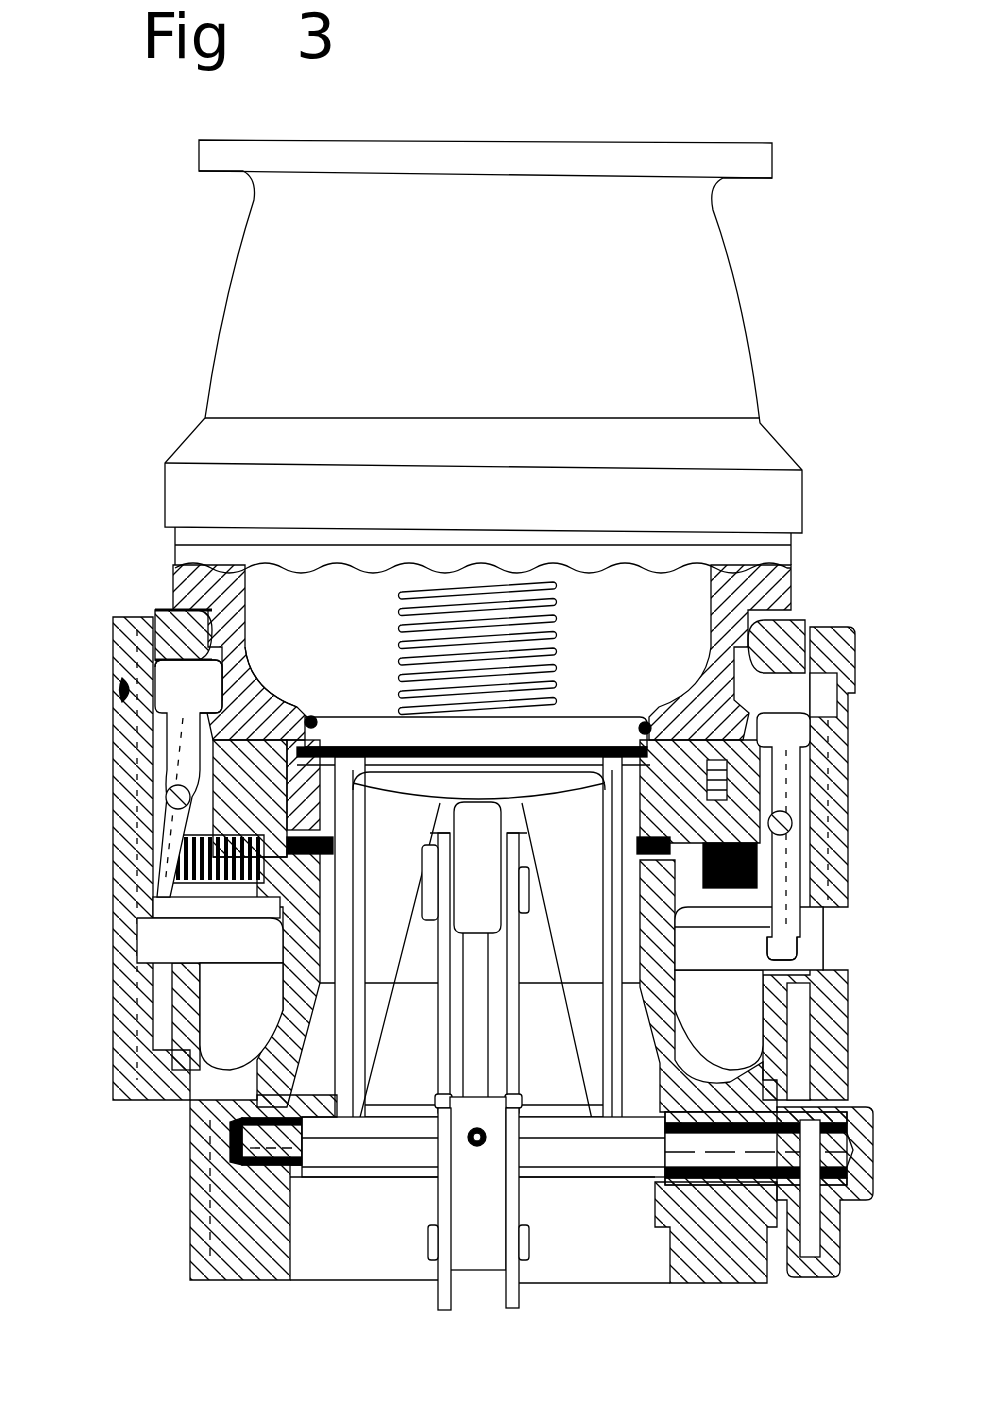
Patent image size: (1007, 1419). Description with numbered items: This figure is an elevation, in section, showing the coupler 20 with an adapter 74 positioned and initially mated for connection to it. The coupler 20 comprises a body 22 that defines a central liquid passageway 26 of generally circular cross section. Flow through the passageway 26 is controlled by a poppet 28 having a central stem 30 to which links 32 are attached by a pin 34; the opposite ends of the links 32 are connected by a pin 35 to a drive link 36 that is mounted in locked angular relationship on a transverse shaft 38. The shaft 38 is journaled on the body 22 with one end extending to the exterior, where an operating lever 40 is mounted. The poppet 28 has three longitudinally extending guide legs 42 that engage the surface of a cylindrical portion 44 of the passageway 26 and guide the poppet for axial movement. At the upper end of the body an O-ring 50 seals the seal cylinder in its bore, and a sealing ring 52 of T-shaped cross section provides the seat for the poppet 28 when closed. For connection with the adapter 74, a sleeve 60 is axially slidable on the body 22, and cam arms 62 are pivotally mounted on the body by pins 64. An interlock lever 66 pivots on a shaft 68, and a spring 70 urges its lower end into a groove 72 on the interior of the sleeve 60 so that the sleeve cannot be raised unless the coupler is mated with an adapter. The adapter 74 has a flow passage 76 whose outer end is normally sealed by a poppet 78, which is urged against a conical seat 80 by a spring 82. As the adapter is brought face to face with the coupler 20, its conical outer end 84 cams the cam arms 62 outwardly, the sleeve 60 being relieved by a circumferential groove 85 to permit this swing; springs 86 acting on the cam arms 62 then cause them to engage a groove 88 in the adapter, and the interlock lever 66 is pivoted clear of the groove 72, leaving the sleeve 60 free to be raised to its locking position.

The coupler 20 is at (100, 1058).
The body 22 is at (275, 1057).
The central liquid passageway 26 is at (292, 1228).
The poppet 28 is at (543, 788).
The central stem 30 is at (503, 940).
The links 32 is at (438, 1043).
The pin 34 is at (530, 878).
The pin 35 is at (529, 1240).
The drive link 36 is at (497, 1285).
The transverse shaft 38 is at (565, 1177).
The operating lever 40 is at (833, 1235).
The guide legs 42 is at (436, 1078).
The cylindrical portion 44 is at (336, 920).
The O-ring 50 is at (320, 803).
The sealing ring 52 is at (330, 746).
The sleeve 60 is at (848, 962).
The cam arms 62 is at (232, 652).
The pins 64 is at (166, 800).
The interlock lever 66 is at (802, 785).
The shaft 68 is at (792, 826).
The spring 70 is at (735, 910).
The groove 72 is at (830, 932).
The adapter 74 is at (778, 372).
The flow passage 76 is at (245, 607).
The poppet 78 is at (566, 715).
The conical seat 80 is at (312, 718).
The spring 82 is at (556, 636).
The conical outer end 84 is at (196, 722).
The circumferential groove 85 is at (125, 697).
The springs 86 is at (200, 890).
The groove 88 is at (255, 692).